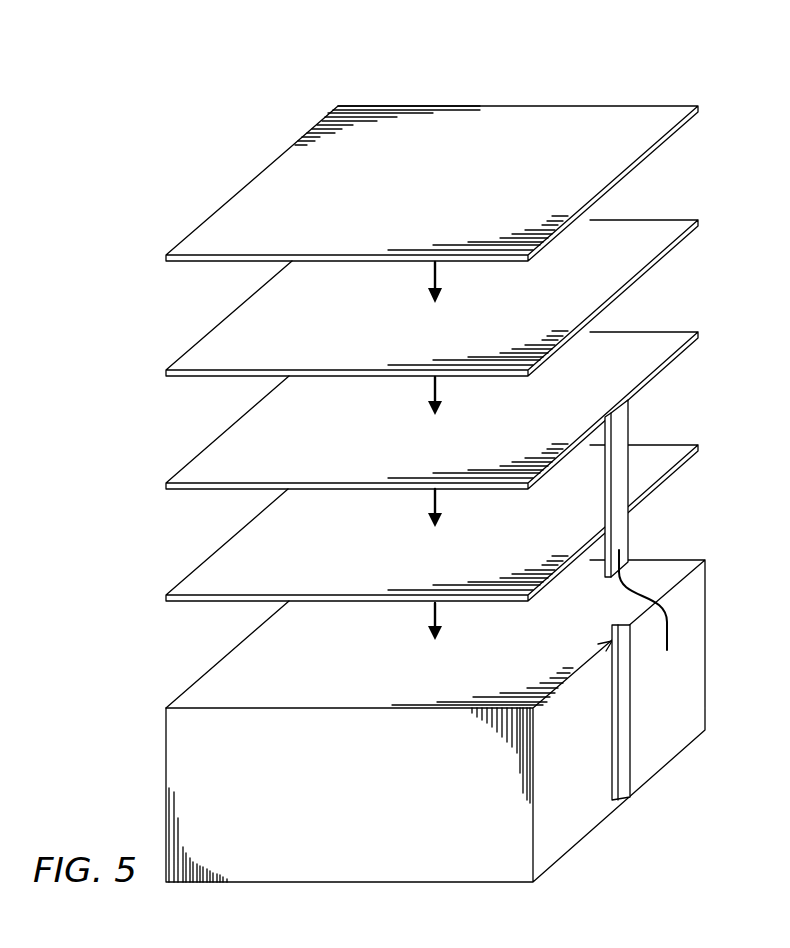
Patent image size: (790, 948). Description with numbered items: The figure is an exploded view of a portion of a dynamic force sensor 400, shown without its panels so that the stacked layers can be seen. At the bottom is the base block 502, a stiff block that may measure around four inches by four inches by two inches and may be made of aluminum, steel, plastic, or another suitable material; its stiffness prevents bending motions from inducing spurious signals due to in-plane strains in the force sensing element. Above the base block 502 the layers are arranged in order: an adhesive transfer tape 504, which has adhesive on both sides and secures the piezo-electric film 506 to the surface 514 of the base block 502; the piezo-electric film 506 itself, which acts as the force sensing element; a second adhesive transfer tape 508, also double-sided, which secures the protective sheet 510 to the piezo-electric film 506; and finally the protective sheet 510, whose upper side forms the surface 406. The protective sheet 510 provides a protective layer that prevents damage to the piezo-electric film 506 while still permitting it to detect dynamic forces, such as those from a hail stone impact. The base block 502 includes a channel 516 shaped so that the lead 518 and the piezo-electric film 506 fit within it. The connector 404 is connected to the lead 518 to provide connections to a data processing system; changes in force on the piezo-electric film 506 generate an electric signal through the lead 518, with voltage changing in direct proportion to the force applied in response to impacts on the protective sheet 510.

The dynamic force sensor 400 is at (663, 54).
The surface 406 is at (452, 197).
The protective sheet 510 is at (542, 107).
The adhesive transfer tape 508 is at (660, 220).
The piezo-electric film 506 is at (660, 332).
The adhesive transfer tape 504 is at (660, 445).
The base block 502 is at (668, 740).
The surface 514 is at (207, 688).
The channel 516 is at (617, 802).
The lead 518 is at (628, 540).
The connector 404 is at (668, 641).